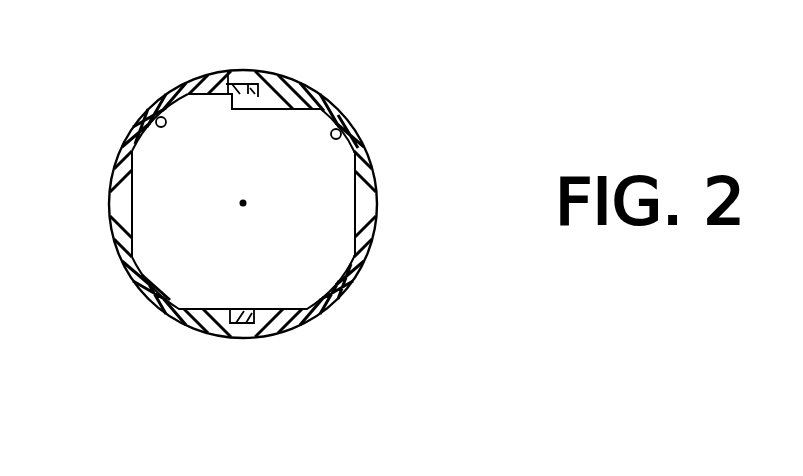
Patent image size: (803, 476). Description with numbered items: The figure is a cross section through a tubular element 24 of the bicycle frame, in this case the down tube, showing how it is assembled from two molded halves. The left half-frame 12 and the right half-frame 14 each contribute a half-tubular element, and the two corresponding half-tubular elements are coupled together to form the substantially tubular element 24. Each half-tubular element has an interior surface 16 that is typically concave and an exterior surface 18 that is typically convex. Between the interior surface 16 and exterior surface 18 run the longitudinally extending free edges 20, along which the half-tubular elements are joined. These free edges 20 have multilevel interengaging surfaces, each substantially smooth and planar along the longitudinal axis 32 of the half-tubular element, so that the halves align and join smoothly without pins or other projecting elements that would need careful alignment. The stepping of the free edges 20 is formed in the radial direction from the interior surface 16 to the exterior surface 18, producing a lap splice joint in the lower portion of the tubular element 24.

The left half-frame 12 is at (122, 203).
The right half-frame 14 is at (370, 215).
The interior surface 16 is at (153, 113).
The exterior surface 18 is at (148, 288).
The longitudinally extending free edges 20 is at (228, 72).
The tubular element 24 is at (183, 327).
The longitudinal axis 32 is at (244, 203).